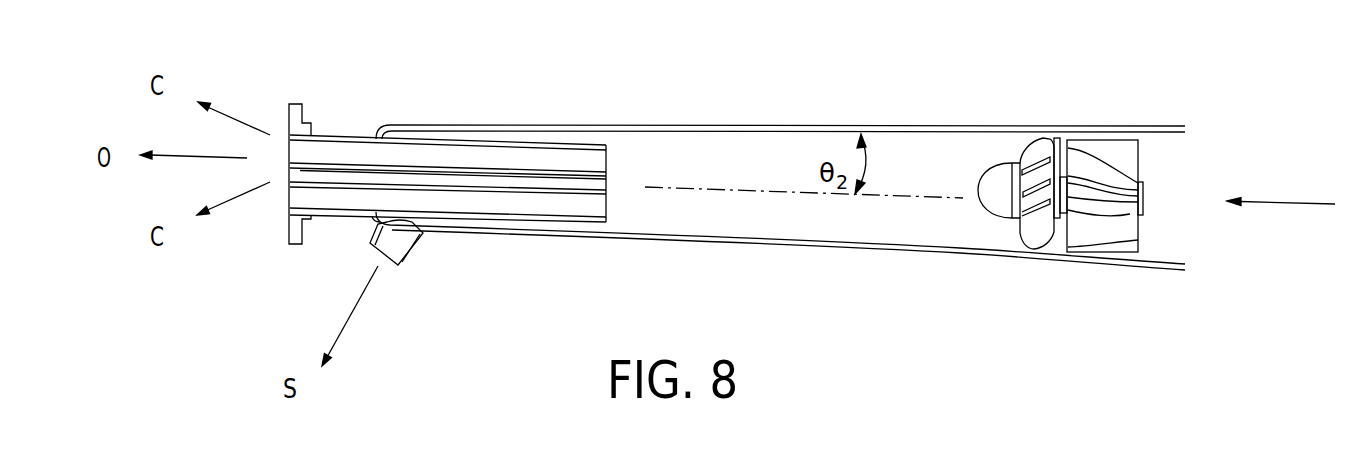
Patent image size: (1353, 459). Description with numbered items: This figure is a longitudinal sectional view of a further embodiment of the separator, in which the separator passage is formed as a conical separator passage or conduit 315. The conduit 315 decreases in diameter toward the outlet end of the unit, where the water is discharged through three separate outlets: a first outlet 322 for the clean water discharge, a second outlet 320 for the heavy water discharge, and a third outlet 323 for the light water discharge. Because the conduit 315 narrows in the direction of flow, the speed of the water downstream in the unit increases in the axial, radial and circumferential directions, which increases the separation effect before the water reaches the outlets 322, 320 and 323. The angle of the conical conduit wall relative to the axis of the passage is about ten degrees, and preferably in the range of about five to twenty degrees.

The conical separator passage or conduit 315 is at (718, 243).
The second outlet 320 is at (423, 236).
The first outlet 322 is at (510, 210).
The third outlet 323 is at (509, 171).